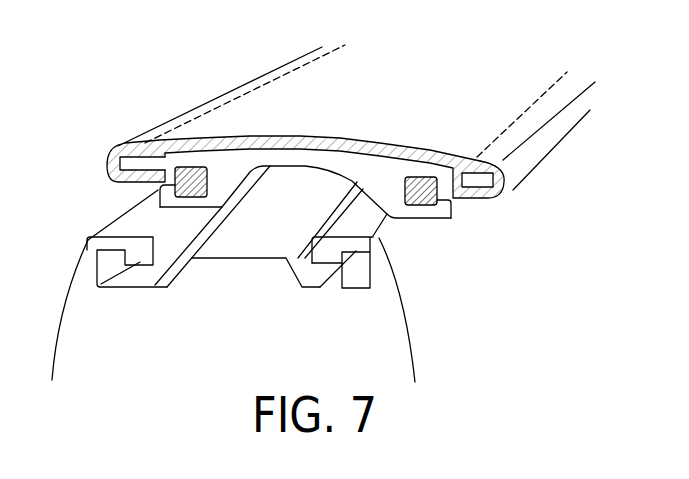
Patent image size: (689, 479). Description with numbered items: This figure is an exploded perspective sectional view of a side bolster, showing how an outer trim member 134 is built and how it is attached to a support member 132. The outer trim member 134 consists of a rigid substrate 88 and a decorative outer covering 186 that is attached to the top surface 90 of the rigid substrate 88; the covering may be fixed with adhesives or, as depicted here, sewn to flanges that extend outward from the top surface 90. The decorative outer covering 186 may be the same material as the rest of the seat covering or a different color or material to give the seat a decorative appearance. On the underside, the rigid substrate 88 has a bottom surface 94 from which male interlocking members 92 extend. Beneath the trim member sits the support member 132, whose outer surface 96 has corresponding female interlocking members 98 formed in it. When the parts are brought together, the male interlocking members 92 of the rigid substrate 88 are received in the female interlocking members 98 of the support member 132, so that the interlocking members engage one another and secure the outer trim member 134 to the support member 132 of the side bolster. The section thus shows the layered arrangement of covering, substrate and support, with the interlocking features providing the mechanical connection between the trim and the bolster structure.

The rigid substrate 88 is at (390, 150).
The top surface 90 is at (287, 136).
The interlocking members 92 is at (166, 186).
The bottom surface 94 is at (327, 170).
The outer surface 96 is at (265, 260).
The corresponding interlocking members 98 is at (147, 277).
The support member 132 is at (438, 312).
The outer trim member 134 is at (298, 81).
The decorative outer covering 186 is at (218, 97).